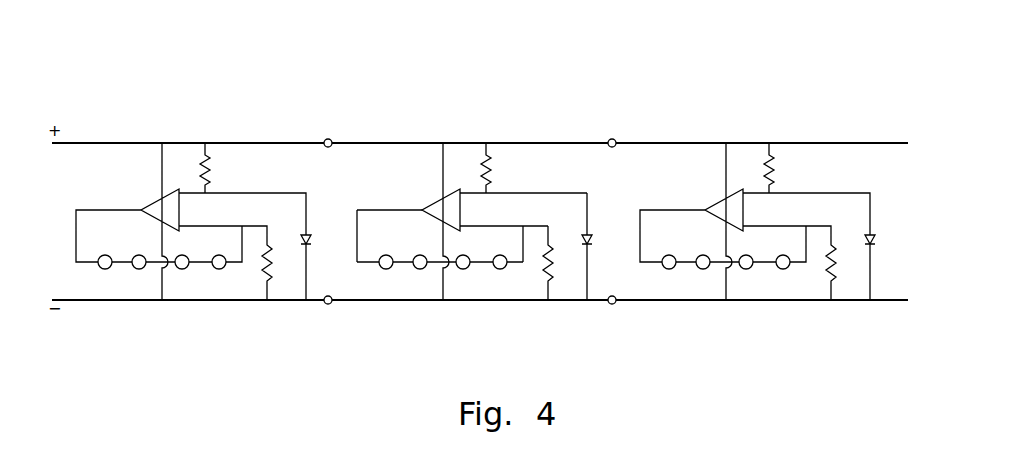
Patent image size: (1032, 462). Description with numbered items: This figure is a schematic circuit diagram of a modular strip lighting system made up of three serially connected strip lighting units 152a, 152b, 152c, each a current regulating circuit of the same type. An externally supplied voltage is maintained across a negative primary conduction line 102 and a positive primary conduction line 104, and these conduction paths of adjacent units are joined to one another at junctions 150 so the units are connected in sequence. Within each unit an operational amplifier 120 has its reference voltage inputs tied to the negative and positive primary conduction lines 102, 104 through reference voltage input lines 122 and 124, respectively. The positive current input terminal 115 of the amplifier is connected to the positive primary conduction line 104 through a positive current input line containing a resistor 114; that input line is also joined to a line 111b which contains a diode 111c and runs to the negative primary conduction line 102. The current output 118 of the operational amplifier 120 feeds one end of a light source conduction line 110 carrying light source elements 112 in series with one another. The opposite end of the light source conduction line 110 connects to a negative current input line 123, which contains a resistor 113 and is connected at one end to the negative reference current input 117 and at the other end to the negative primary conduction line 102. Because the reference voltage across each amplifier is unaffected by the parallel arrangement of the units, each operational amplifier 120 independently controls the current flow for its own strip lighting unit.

The negative primary conduction line 102 is at (692, 304).
The positive primary conduction line 104 is at (687, 143).
The light source conduction line 110 is at (428, 277).
The line 111b is at (540, 195).
The diode 111c is at (590, 238).
The light source elements 112 is at (505, 268).
The resistor 113 is at (555, 272).
The resistor 114 is at (492, 170).
The positive current input terminal 115 is at (463, 189).
The negative reference current input 117 is at (462, 228).
The current output 118 is at (439, 212).
The operational amplifier 120 is at (440, 216).
The reference voltage input line 122 is at (444, 288).
The negative current input line 123 is at (522, 226).
The reference voltage input line 124 is at (443, 157).
The junctions 150 is at (328, 139).
The strip lighting unit 152a is at (184, 76).
The strip lighting unit 152b is at (475, 154).
The strip lighting unit 152c is at (772, 94).